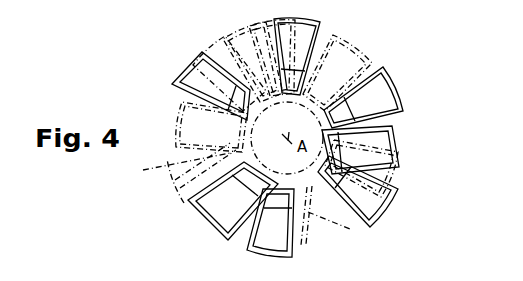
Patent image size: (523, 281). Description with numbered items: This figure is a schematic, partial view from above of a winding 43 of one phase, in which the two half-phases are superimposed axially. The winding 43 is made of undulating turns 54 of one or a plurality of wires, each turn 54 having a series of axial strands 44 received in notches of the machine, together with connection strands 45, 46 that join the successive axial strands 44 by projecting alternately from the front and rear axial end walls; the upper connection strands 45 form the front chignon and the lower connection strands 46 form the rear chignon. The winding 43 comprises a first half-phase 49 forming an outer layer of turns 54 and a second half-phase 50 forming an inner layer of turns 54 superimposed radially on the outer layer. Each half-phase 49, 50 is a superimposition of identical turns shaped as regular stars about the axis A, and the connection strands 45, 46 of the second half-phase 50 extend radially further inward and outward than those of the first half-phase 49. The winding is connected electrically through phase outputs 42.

The phase output 42 is at (188, 200).
The winding 43 is at (386, 228).
The axial strand 44 is at (180, 115).
The upper connection strand 45 is at (392, 92).
The lower connection strand 46 is at (333, 50).
The first half-phase 49 is at (242, 21).
The second half-phase 50 is at (171, 61).
The undulating turn 54 is at (400, 152).